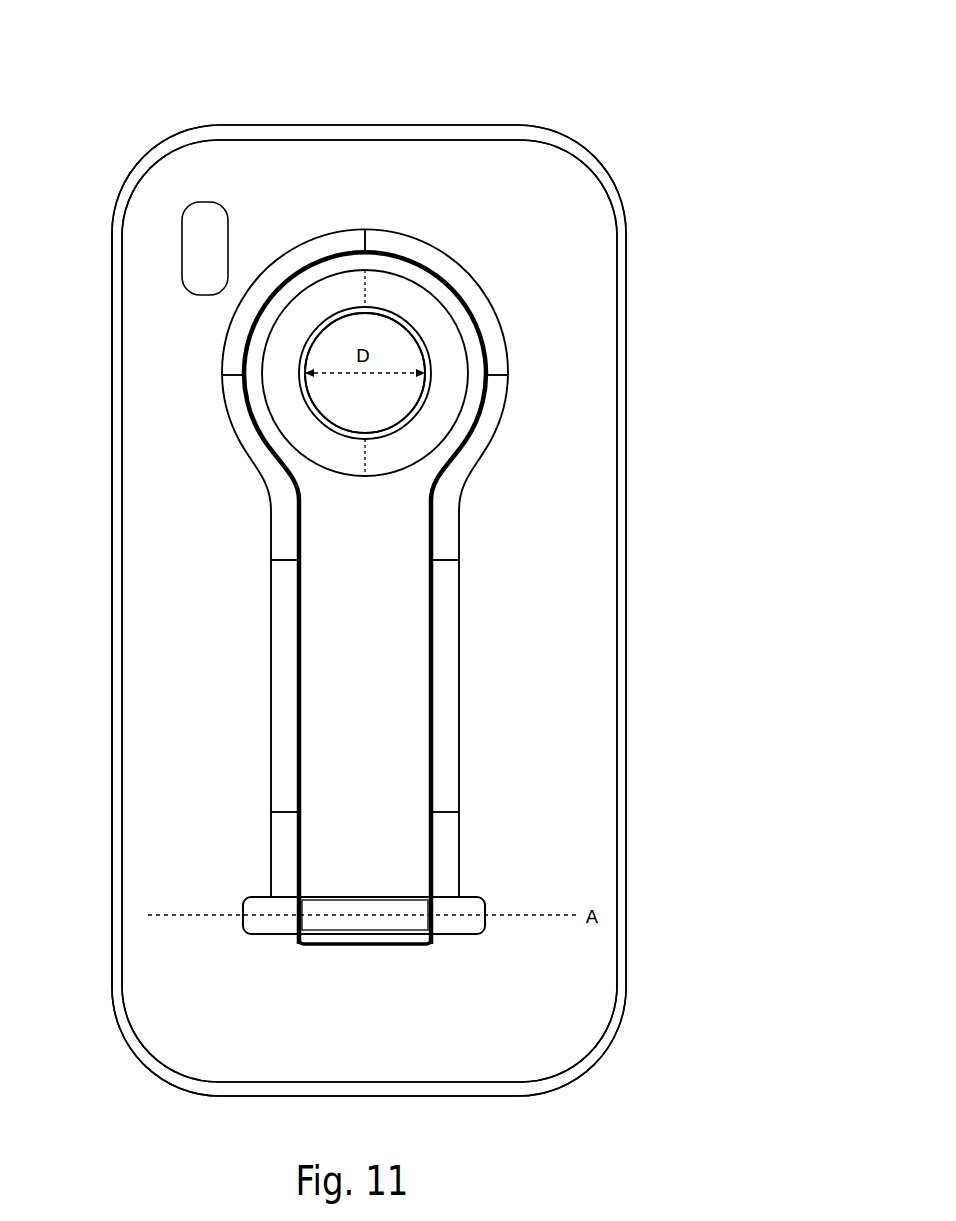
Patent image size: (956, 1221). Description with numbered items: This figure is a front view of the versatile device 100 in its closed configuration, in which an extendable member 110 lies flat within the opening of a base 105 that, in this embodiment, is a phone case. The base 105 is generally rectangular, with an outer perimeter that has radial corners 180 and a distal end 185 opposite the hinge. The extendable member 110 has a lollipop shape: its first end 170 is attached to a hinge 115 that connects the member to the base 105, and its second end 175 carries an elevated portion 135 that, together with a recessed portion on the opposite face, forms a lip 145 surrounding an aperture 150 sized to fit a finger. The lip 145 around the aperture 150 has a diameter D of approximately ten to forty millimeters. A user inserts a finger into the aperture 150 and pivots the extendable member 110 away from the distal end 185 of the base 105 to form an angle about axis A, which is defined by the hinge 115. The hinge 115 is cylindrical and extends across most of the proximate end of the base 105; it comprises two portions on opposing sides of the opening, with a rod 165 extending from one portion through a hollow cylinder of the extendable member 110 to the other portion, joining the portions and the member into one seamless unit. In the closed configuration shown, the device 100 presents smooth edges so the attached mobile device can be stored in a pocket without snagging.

The versatile device 100 is at (632, 130).
The base 105 is at (150, 710).
The extendable member 110 is at (402, 629).
The hinge 115 is at (455, 930).
The elevated portion 135 is at (418, 358).
The lip 145 is at (385, 307).
The aperture 150 is at (333, 352).
The rod 165 is at (487, 915).
The first end 170 is at (368, 860).
The second end 175 is at (310, 263).
The radial corners 180 is at (583, 147).
The distal end 185 is at (450, 157).